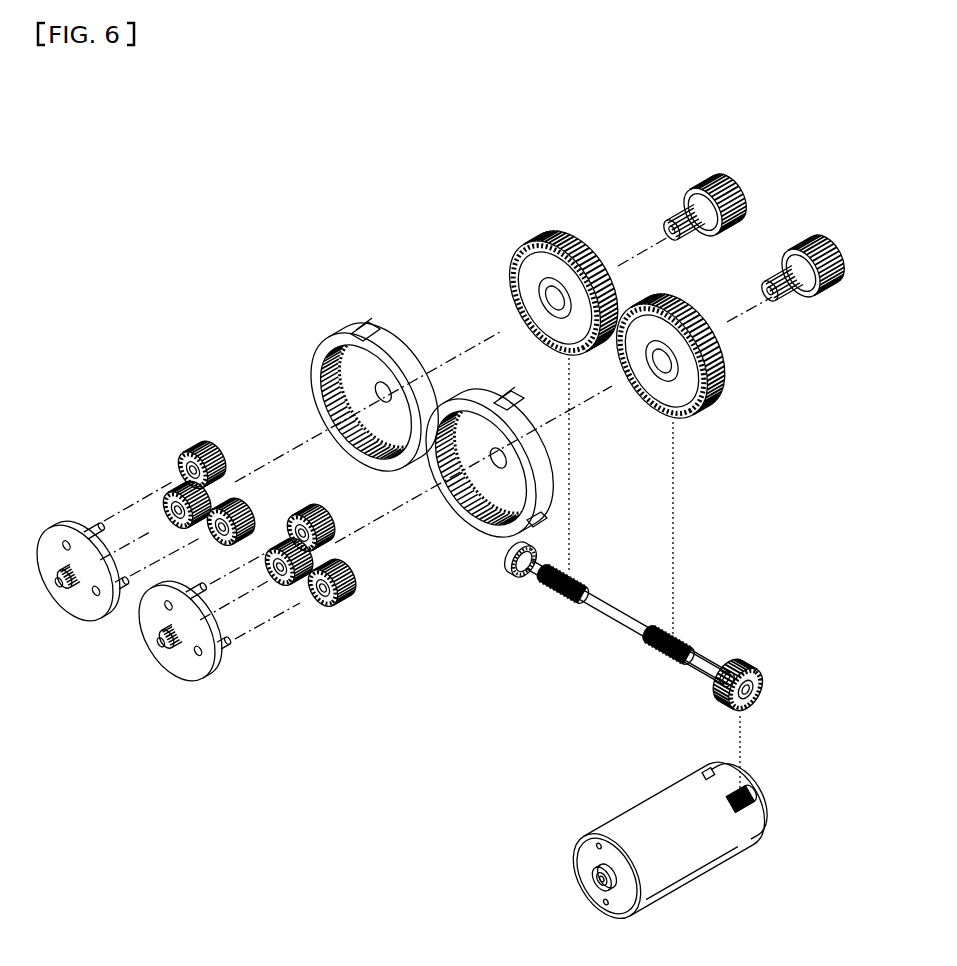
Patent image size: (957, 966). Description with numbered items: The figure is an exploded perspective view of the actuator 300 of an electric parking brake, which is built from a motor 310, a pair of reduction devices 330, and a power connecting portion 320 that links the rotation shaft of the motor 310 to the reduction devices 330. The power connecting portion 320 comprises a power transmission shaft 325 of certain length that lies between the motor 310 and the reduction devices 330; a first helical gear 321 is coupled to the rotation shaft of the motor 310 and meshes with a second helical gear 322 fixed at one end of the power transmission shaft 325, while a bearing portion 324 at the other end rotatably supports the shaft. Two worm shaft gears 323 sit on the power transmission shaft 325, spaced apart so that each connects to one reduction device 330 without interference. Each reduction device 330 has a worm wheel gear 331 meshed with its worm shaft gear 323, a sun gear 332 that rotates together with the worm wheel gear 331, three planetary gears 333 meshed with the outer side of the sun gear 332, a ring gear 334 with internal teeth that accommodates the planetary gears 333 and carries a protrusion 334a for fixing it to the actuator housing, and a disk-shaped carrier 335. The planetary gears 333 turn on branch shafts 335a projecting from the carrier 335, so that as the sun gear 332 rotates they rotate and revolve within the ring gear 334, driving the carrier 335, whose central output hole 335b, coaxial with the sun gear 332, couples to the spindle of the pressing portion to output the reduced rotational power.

The actuator 300 is at (406, 193).
The motor 310 is at (687, 878).
The power connecting portion 320 is at (781, 750).
The first helical gear 321 is at (757, 797).
The second helical gear 322 is at (737, 684).
The worm shaft gear 323 is at (616, 614).
The bearing portion 324 is at (520, 560).
The power transmission shaft 325 is at (630, 623).
The reduction device 330 is at (322, 312).
The worm wheel gear 331 is at (553, 230).
The sun gear 332 is at (690, 184).
The planetary gears 333 is at (196, 440).
The ring gear 334 is at (398, 344).
The protrusion 334a is at (362, 323).
The carrier 335 is at (180, 668).
The planetary gear branch shafts 335a is at (170, 645).
The output hole 335b is at (169, 637).